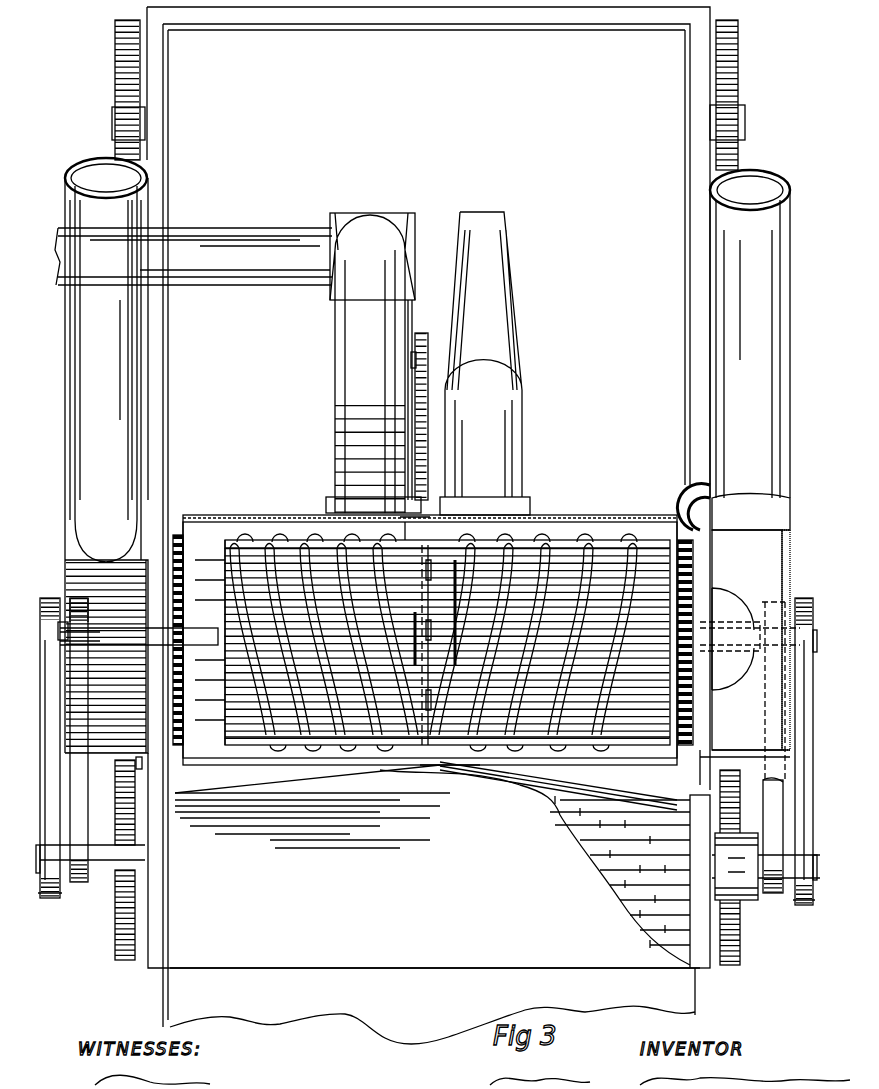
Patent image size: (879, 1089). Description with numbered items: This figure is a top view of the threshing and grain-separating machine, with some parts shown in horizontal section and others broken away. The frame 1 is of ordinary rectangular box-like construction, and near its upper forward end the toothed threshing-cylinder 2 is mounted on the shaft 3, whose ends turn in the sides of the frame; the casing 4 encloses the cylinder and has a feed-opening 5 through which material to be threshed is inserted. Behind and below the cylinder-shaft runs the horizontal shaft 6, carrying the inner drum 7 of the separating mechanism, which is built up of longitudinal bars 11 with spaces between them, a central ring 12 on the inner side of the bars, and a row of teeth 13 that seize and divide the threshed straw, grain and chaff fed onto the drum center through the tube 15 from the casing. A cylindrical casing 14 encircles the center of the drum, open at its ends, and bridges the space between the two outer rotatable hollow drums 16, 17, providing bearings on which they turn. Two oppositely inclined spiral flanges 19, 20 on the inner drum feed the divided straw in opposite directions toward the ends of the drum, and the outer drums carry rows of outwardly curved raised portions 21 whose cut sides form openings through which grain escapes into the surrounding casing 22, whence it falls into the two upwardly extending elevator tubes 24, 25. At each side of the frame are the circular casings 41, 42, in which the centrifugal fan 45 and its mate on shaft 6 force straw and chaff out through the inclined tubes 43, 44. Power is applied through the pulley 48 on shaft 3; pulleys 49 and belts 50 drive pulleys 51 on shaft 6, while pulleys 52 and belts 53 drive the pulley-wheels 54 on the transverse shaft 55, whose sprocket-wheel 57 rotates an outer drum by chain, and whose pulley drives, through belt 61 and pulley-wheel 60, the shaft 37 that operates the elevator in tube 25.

The frame 1 is at (556, 22).
The threshing-cylinder 2 is at (433, 719).
The cylinder-shaft 3 is at (128, 862).
The casing 4 is at (312, 868).
The feed-opening 5 is at (430, 984).
The horizontal shaft 6 is at (58, 632).
The inner drum 7 is at (410, 742).
The longitudinal bars 11 is at (476, 660).
The ring 12 is at (418, 612).
The teeth 13 is at (435, 750).
The cylindrical casing 14 is at (392, 517).
The tube 15 is at (558, 785).
The outer drum 16 is at (655, 540).
The outer drum 17 is at (265, 540).
The spiral flange 19 is at (326, 632).
The spiral flange 20 is at (574, 637).
The raised portions 21 is at (630, 540).
The casing 22 is at (586, 518).
The tube 24 is at (485, 363).
The tube 25 is at (238, 363).
The horizontal rotatable shaft 37 is at (411, 360).
The casing 41 is at (720, 604).
The casing 42 is at (106, 656).
The tube 43 is at (733, 275).
The tube 44 is at (106, 386).
The centrifugal fan 45 is at (745, 657).
The pulley 48 is at (745, 900).
The pulley 49 is at (50, 898).
The belt 50 is at (46, 722).
The pulley 51 is at (50, 596).
The pulley 52 is at (80, 890).
The belt 53 is at (85, 790).
The pulley-wheel 54 is at (82, 598).
The horizontal transverse shaft 55 is at (126, 632).
The sprocket-wheel 57 is at (204, 642).
The pulley-wheel 60 is at (420, 333).
The belt 61 is at (425, 455).